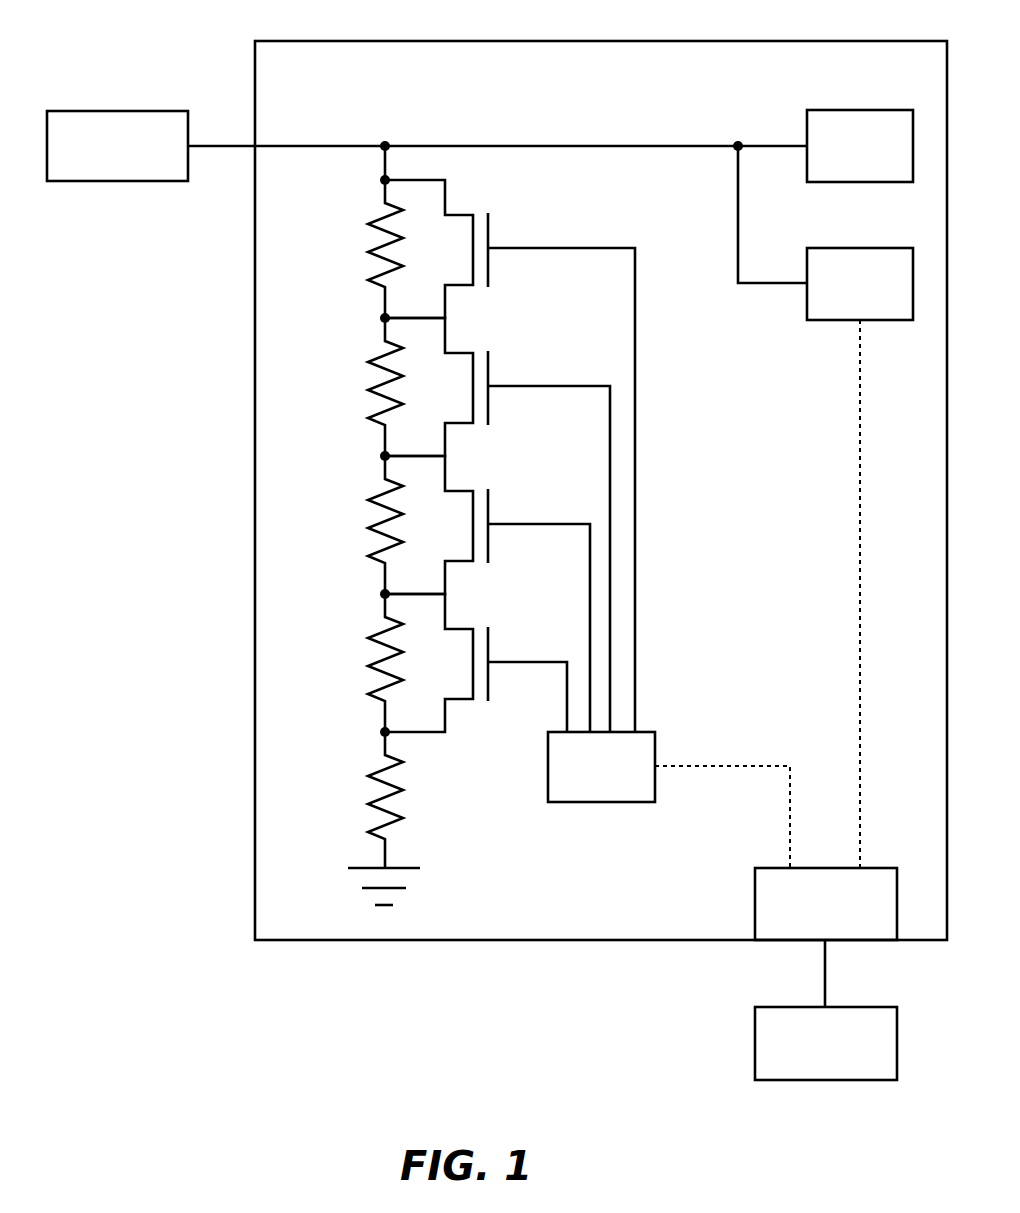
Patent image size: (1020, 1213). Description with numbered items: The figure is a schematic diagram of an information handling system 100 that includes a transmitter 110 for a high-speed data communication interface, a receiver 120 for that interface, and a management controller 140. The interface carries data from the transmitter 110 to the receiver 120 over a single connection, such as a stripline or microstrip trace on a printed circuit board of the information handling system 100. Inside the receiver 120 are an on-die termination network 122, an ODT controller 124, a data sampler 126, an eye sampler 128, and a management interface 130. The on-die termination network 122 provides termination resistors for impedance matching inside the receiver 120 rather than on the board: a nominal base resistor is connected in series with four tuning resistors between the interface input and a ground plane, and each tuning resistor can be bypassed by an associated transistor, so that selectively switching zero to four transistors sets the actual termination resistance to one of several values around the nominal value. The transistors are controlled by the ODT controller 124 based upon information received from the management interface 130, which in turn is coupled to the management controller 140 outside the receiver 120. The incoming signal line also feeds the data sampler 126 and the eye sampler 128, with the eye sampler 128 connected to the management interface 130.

The information handling system 100 is at (488, 543).
The transmitter 110 is at (49, 111).
The receiver 120 is at (259, 41).
The on-die termination (ODT) network 122 is at (412, 122).
The ODT controller 124 is at (558, 802).
The data sampler 126 is at (811, 110).
The eye sampler 128 is at (811, 248).
The management interface 130 is at (759, 868).
The management controller 140 is at (759, 1007).